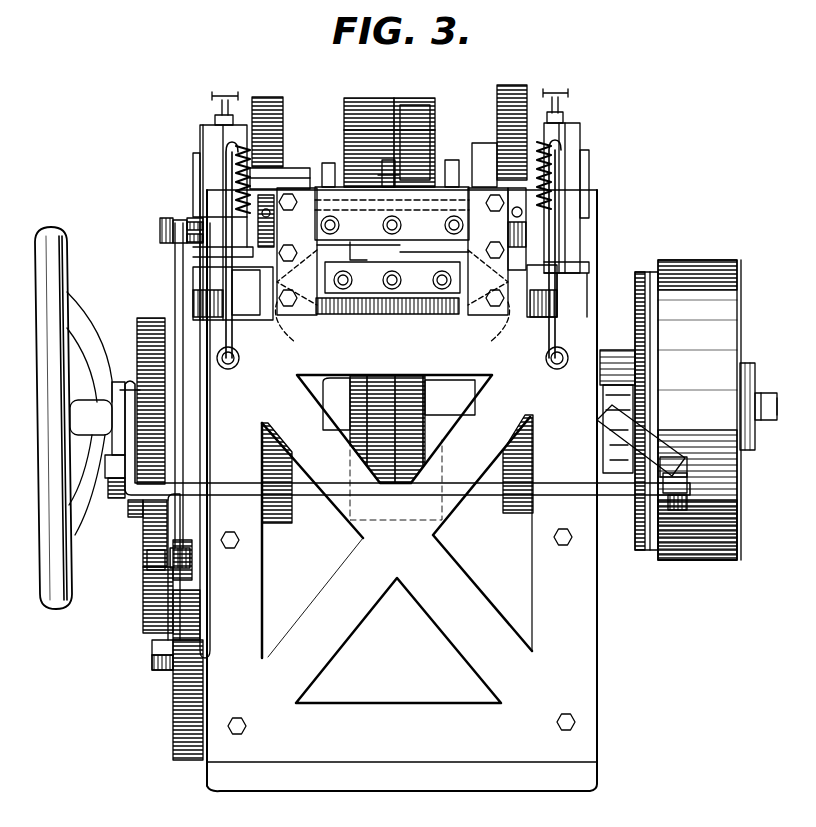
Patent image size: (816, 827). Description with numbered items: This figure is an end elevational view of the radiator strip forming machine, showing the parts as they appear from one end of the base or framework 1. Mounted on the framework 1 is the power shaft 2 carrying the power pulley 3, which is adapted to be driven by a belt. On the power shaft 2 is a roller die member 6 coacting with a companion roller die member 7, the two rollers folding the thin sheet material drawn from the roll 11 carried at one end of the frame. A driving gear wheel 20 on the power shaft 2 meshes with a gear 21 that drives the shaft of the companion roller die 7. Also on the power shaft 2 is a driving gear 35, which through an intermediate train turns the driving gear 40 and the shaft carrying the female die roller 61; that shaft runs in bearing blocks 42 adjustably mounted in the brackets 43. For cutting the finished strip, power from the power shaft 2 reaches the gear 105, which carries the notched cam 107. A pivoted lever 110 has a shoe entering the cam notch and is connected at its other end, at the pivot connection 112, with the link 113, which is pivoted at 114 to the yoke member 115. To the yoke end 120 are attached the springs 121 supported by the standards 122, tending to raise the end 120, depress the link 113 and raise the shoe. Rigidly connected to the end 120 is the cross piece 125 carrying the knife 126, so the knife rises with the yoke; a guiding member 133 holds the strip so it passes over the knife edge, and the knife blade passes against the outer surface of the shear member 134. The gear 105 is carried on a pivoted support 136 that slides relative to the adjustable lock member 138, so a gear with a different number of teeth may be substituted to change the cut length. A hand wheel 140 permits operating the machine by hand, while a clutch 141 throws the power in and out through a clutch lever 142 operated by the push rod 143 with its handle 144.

The base or framework 1 is at (315, 600).
The power shaft 2 is at (757, 398).
The power pulley 3 is at (690, 278).
The roller die member 6 is at (407, 392).
The companion roller die member 7 is at (395, 102).
The roll of thin sheet material 11 is at (295, 175).
The driving gear wheel 20 is at (278, 525).
The gear 21 is at (283, 130).
The driving gear 35 is at (513, 486).
The driving gear 40 is at (512, 100).
The bearing blocks 42 is at (193, 192).
The brackets 43 is at (210, 178).
The female die roller 61 is at (415, 130).
The gear 105 is at (150, 318).
The cam 107 is at (200, 478).
The lever 110 is at (150, 592).
The pivot connection 112 is at (150, 568).
The link 113 is at (175, 270).
The pivot 114 is at (163, 233).
The yoke member 115 is at (187, 222).
The end of the yoke 120 is at (603, 206).
The springs 121 is at (233, 152).
The standards 122 is at (225, 180).
The cross piece 125 is at (315, 305).
The knife 126 is at (368, 282).
The guiding member 133 is at (378, 184).
The shear member 134 is at (418, 222).
The pivoted support 136 is at (187, 604).
The adjustable lock member 138 is at (152, 658).
The hand wheel 140 is at (45, 245).
The clutch 141 is at (650, 273).
The clutch lever 142 is at (600, 352).
The push rod 143 is at (418, 496).
The handle 144 is at (128, 388).